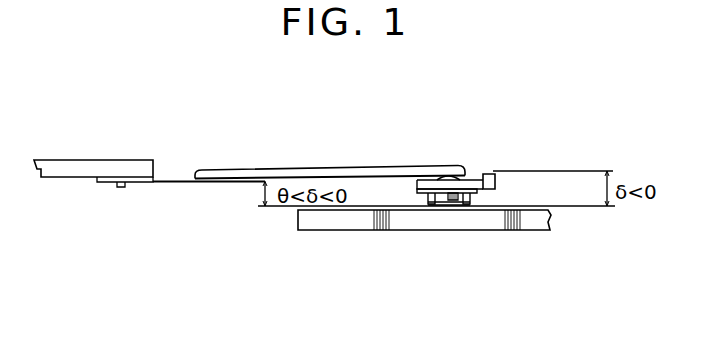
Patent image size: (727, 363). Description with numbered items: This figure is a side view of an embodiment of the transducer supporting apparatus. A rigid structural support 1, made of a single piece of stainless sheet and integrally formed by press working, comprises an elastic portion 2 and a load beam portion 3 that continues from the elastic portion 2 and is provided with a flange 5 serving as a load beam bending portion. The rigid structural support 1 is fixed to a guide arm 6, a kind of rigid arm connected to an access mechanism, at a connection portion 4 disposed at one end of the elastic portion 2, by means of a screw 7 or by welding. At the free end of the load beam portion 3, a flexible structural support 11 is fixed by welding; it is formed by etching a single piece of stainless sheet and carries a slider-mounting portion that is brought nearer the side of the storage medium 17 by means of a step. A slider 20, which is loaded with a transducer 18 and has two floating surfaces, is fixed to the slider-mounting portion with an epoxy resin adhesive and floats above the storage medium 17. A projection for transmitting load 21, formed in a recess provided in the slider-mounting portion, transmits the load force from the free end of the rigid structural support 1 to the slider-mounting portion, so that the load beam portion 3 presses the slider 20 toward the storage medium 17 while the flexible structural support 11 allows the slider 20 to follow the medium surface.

The rigid structural support 1 is at (287, 160).
The elastic portion 2 is at (170, 182).
The load beam portion 3 is at (223, 180).
The connection portion 4 is at (102, 183).
The flange 5 is at (350, 168).
The guide arm 6 is at (82, 160).
The screw 7 is at (121, 188).
The flexible structural support 11 is at (488, 173).
The storage medium 17 is at (340, 223).
The transducer 18 is at (477, 203).
The slider 20 is at (427, 197).
The projection for transmitting load 21 is at (437, 174).